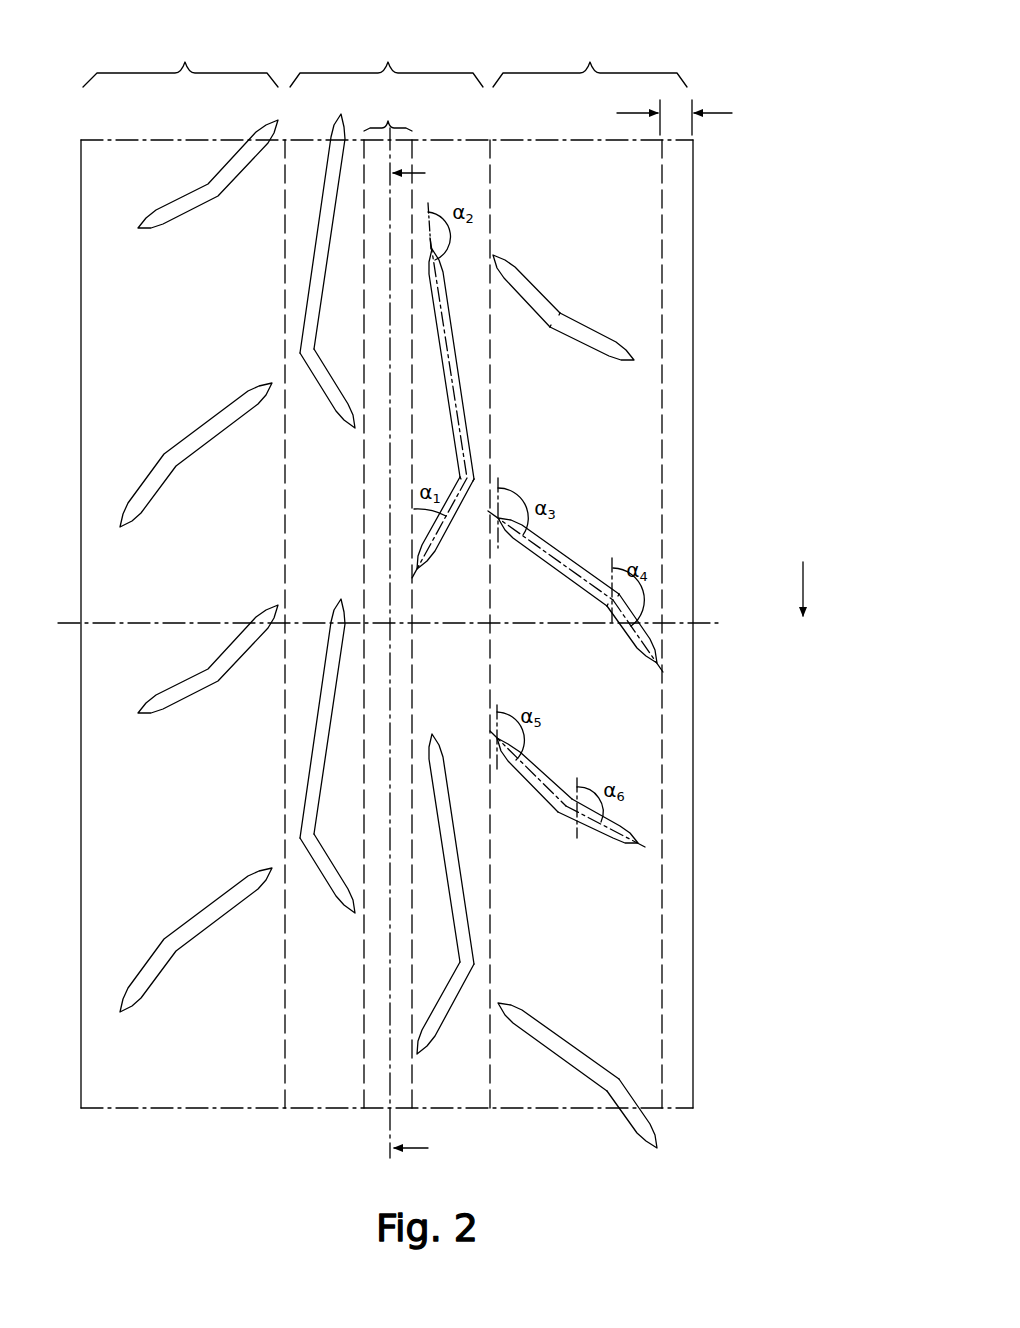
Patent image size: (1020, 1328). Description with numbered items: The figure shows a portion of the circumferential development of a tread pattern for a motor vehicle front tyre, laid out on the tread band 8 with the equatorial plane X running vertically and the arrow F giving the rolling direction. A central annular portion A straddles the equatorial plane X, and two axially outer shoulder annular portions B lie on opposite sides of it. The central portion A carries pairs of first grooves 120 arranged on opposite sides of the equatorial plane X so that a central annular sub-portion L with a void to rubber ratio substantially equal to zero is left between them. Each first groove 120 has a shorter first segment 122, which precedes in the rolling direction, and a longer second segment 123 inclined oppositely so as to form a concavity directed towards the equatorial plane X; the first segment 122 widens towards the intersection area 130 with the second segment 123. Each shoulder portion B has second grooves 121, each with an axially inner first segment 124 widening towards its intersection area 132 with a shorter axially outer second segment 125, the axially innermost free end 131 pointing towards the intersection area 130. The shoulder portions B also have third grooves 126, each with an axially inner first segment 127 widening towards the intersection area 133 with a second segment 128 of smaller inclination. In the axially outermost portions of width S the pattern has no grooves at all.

The tread band 8 is at (697, 263).
The first grooves 120 is at (402, 602).
The second grooves 121 is at (448, 727).
The first segment 122 is at (422, 548).
The second segment 123 is at (468, 407).
The first segment 124 is at (548, 550).
The second segment 125 is at (643, 640).
The third grooves 126 is at (438, 512).
The first segment 127 is at (513, 272).
The second segment 128 is at (607, 350).
The intersection area 130 is at (472, 468).
The axially innermost free end 131 is at (498, 518).
The intersection area 132 is at (602, 595).
The intersection area 133 is at (557, 320).
The central annular portion A is at (388, 62).
The shoulder annular portions B is at (185, 62).
The axially outermost portion width S is at (676, 113).
The central annular sub-portion L is at (388, 121).
The equatorial plane X is at (422, 662).
The rolling direction arrow F is at (814, 589).